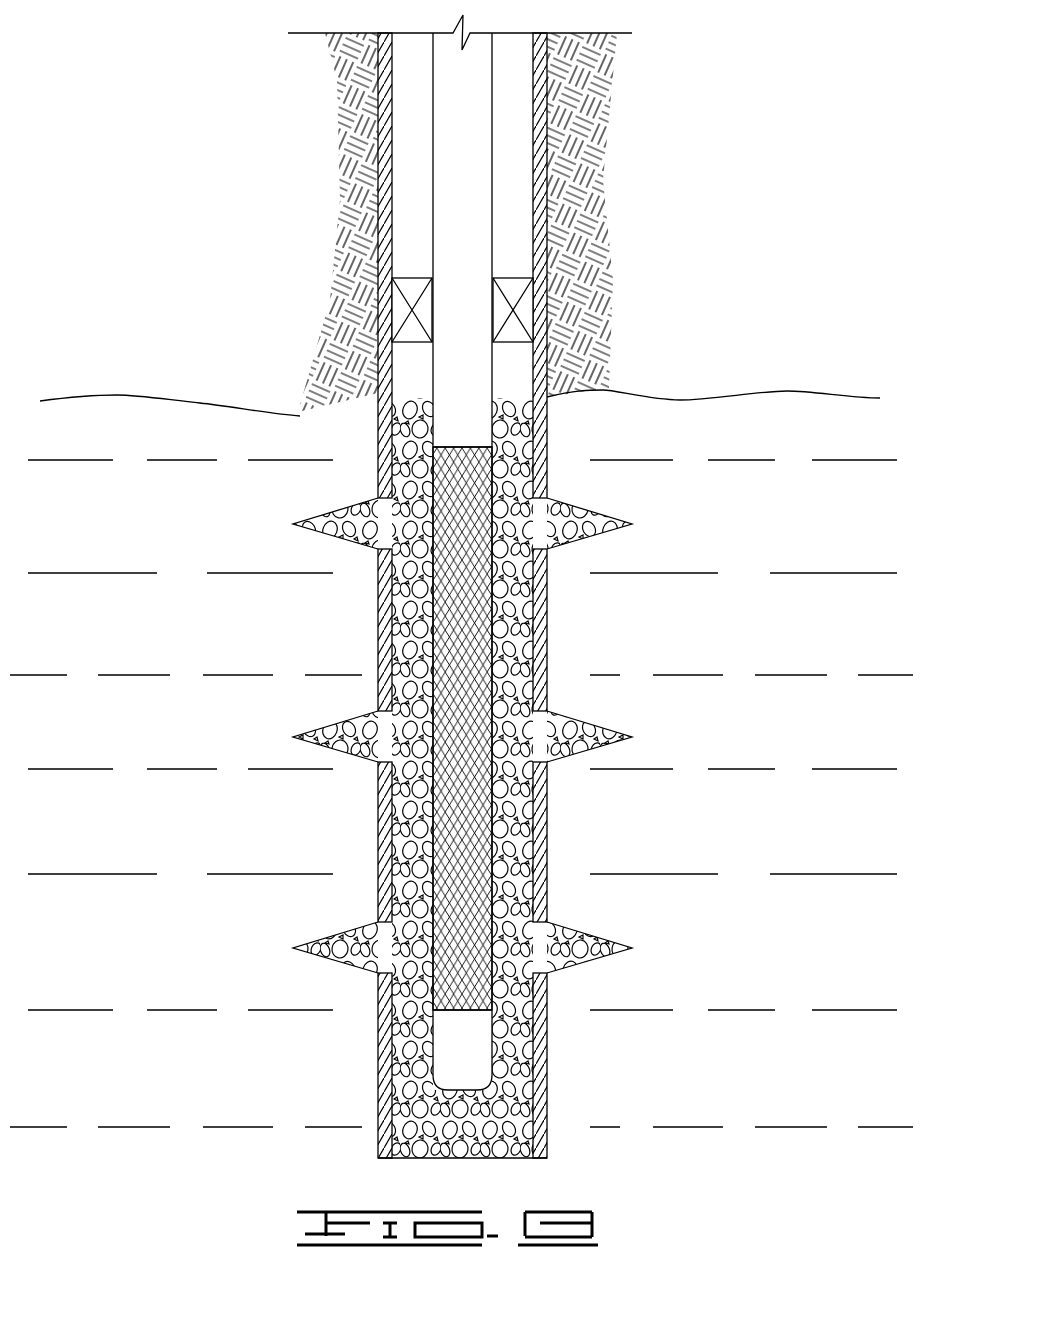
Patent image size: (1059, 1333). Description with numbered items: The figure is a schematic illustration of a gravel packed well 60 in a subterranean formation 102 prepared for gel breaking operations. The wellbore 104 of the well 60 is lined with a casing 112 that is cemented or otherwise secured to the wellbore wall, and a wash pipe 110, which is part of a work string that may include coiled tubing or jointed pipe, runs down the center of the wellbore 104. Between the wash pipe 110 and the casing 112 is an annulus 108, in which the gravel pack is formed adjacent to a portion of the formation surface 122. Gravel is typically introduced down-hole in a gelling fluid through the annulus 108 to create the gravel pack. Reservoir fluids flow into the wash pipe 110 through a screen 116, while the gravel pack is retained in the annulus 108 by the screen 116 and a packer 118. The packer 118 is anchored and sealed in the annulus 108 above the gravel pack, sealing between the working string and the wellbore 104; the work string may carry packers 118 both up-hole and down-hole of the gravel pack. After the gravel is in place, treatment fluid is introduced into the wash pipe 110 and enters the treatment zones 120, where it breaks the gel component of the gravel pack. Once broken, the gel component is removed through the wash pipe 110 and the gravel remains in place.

The well 60 is at (710, 248).
The subterranean formation 102 is at (761, 645).
The wellbore 104 is at (516, 150).
The annulus 108 is at (547, 840).
The wash pipe 110 is at (495, 375).
The casing 112 is at (347, 120).
The screen 116 is at (455, 665).
The packer 118 is at (375, 297).
The treatment zone 120 is at (360, 537).
The formation surface 122 is at (335, 515).